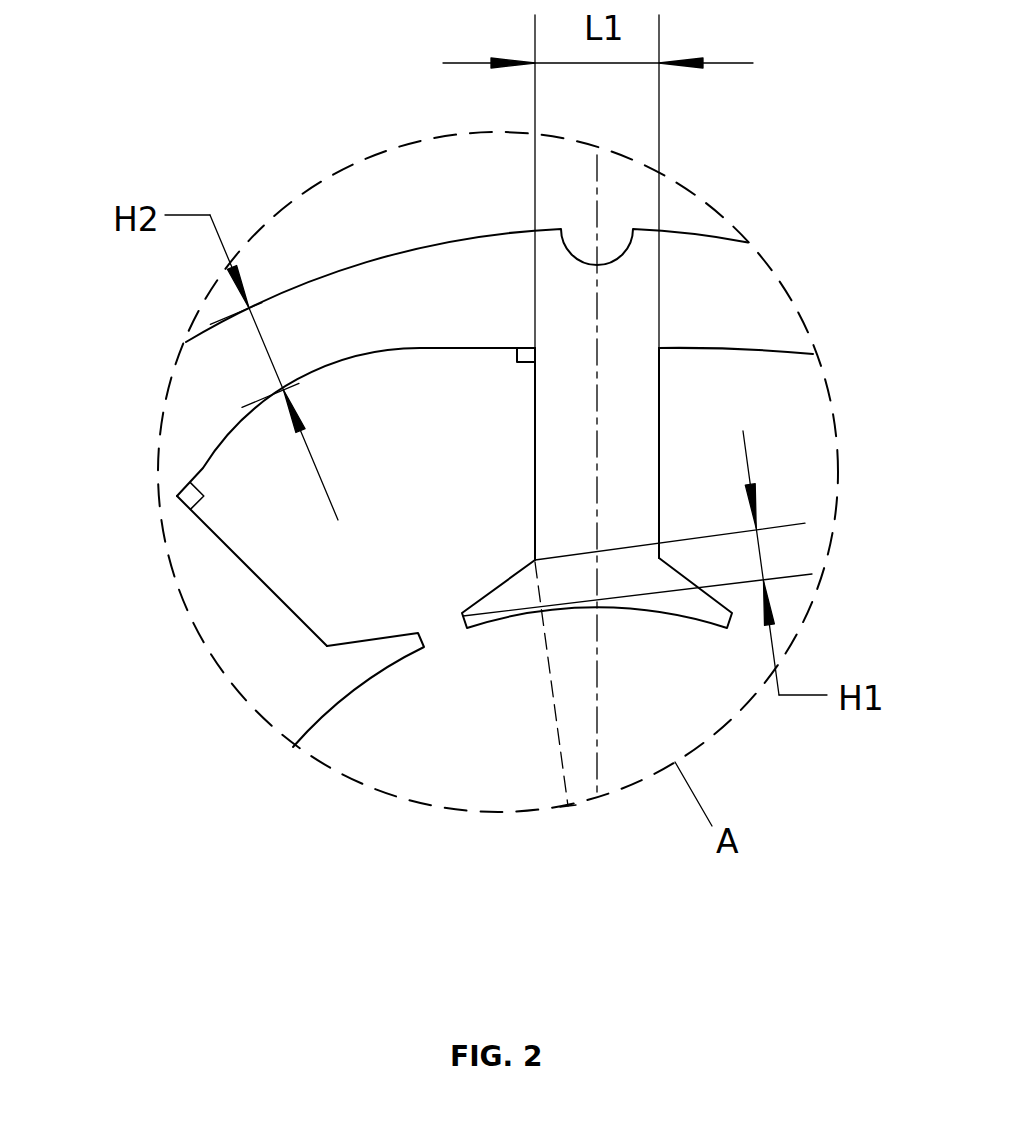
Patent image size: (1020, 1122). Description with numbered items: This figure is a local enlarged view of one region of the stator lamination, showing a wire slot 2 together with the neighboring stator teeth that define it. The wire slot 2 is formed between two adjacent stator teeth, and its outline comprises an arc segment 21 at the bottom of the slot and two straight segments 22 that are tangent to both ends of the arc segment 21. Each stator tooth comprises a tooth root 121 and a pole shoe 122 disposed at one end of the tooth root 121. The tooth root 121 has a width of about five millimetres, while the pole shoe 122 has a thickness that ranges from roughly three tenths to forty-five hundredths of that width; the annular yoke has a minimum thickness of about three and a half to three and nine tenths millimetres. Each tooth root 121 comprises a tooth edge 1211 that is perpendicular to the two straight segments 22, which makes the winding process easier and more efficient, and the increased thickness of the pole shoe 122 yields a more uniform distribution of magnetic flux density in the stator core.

The wire slot 2 is at (390, 557).
The arc segment 21 is at (343, 365).
The straight segment 22 is at (477, 347).
The tooth root 121 is at (615, 412).
The tooth edge 1211 is at (537, 455).
The pole shoe 122 is at (512, 723).